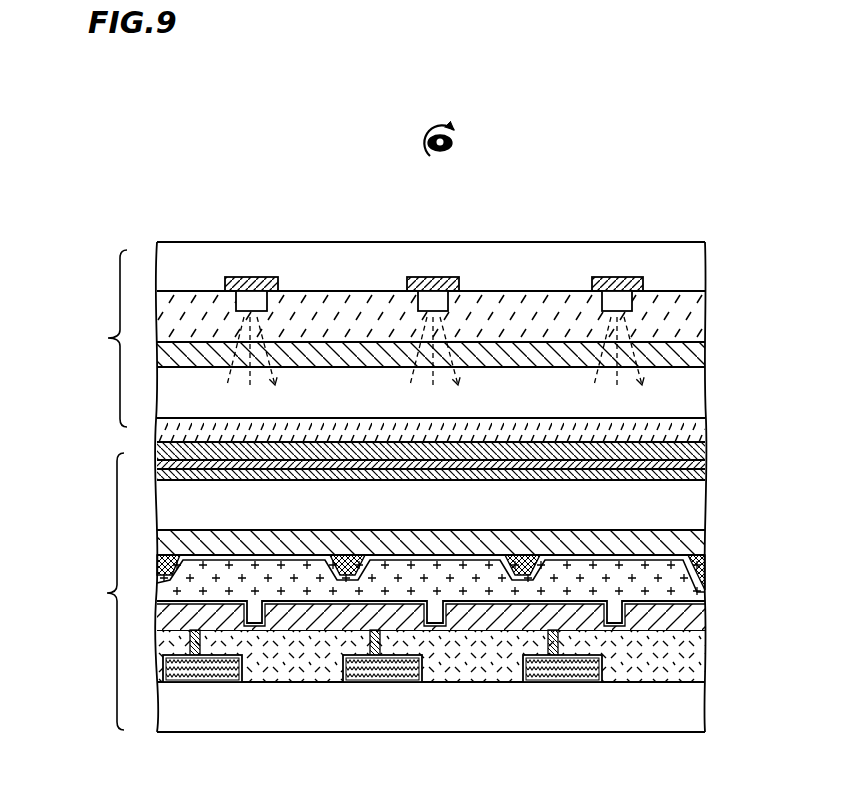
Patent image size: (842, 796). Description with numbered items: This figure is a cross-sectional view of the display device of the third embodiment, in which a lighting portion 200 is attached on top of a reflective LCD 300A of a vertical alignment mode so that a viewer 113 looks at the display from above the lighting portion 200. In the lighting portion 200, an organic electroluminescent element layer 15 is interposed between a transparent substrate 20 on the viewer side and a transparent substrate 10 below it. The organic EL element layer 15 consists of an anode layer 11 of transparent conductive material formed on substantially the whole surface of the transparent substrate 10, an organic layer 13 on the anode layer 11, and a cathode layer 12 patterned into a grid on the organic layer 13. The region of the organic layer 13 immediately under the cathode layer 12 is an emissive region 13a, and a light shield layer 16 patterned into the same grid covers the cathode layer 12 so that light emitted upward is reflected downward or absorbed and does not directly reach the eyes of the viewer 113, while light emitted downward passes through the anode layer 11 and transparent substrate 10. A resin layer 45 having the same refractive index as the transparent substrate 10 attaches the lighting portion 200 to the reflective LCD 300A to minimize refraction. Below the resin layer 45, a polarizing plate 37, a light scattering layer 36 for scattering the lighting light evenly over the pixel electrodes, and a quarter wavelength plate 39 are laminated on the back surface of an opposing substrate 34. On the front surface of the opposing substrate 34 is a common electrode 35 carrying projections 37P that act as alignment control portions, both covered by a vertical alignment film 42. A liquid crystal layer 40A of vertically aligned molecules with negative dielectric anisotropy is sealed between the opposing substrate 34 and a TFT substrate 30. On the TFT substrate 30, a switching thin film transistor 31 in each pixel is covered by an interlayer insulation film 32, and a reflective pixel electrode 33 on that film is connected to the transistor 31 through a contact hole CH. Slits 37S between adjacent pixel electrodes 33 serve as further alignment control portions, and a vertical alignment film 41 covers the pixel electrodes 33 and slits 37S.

The viewer 113 is at (468, 144).
The lighting portion 200 is at (96, 257).
The reflective LCD 300A is at (96, 467).
The transparent substrate 20 is at (697, 269).
The organic layer 13 is at (697, 335).
The emissive region 13a is at (252, 333).
The light shield layer 16 is at (243, 278).
The cathode layer 12 is at (253, 300).
The anode layer 11 is at (697, 361).
The organic electroluminescent element layer 15 is at (758, 298).
The transparent substrate 10 is at (697, 401).
The resin layer 45 is at (697, 430).
The polarizing plate 37 is at (697, 450).
The light scattering layer 36 is at (705, 465).
The λ/4 wavelength plate 39 is at (705, 478).
The opposing substrate 34 is at (697, 511).
The common electrode 35 is at (697, 546).
The vertical alignment film 42 is at (458, 560).
The liquid crystal layer 40A is at (697, 591).
The projections 37P is at (180, 565).
The pixel electrode 33 is at (697, 621).
The interlayer insulation film 32 is at (697, 653).
The switching thin film transistor 31 is at (190, 682).
The contact hole CH is at (187, 637).
The slits 37S is at (255, 617).
The vertical alignment film 41 is at (677, 640).
The TFT substrate 30 is at (697, 706).